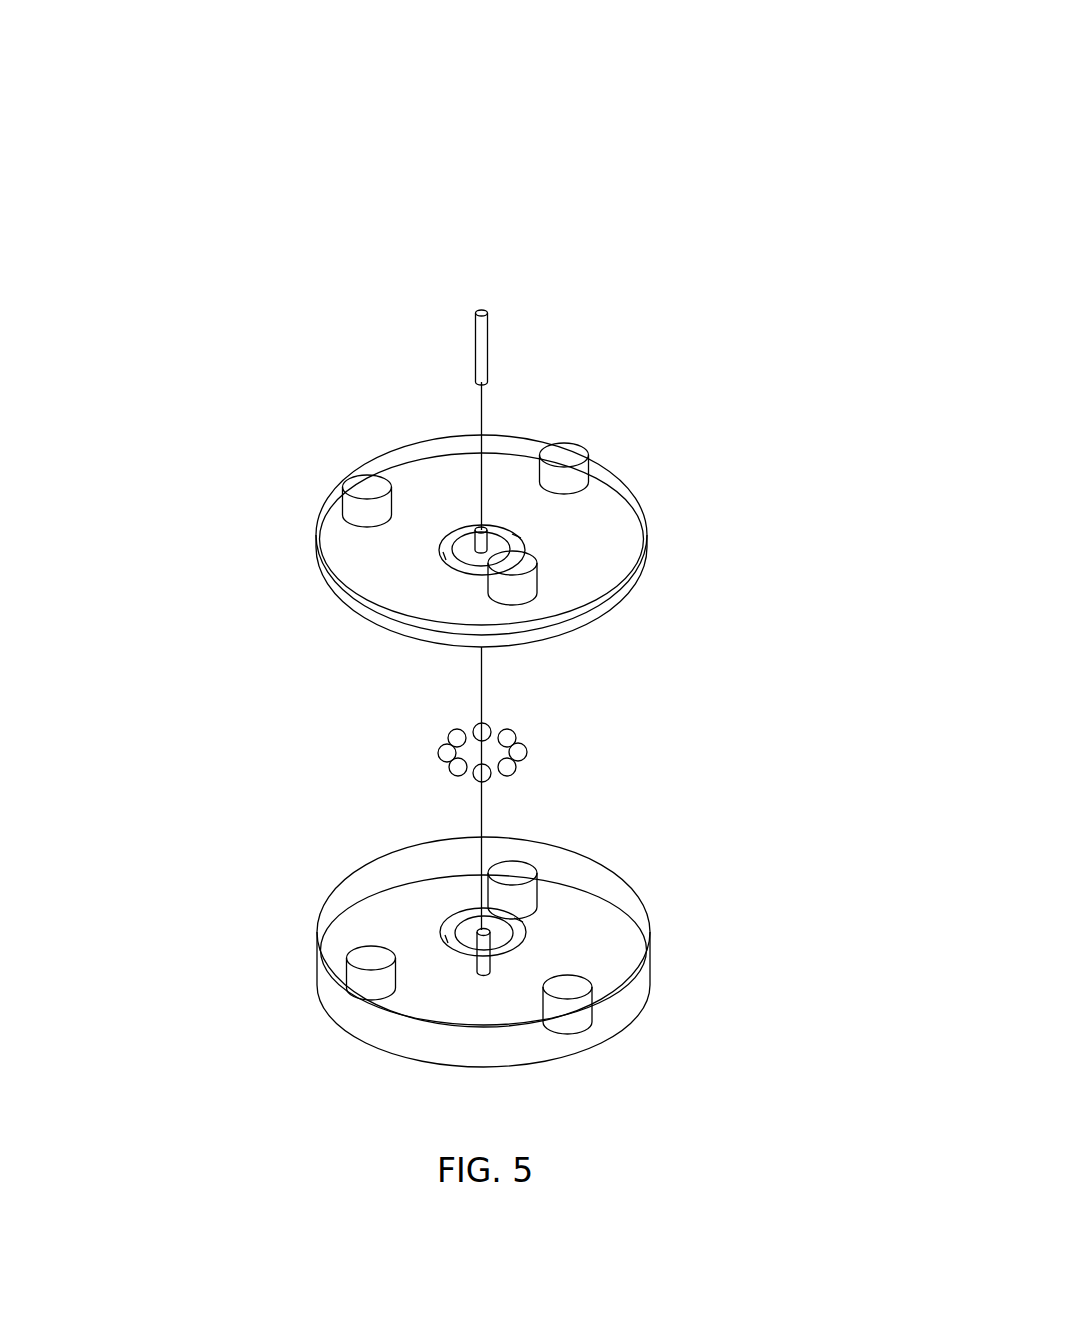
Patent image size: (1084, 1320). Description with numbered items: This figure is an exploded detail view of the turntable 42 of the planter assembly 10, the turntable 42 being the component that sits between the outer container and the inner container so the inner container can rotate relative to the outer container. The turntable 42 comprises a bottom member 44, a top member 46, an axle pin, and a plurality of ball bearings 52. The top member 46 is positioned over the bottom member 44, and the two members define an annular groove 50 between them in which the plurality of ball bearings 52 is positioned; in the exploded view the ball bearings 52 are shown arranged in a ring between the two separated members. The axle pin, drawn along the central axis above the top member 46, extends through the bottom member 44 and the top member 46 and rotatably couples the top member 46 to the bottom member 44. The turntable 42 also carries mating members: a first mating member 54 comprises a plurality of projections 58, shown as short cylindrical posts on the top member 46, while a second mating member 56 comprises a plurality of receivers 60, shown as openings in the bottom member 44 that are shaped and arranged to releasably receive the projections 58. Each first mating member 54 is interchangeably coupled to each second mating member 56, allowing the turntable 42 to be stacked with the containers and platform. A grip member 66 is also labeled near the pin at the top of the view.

The ball bearing assembly 10 is at (624, 203).
The turntable 42 is at (728, 494).
The bottom member 44 is at (633, 937).
The top member 46 is at (610, 542).
The annular groove 50 is at (556, 928).
The ball bearings 52 is at (455, 737).
The first mating members 54 is at (290, 505).
The second mating members 56 is at (343, 1062).
The projections 58 is at (372, 487).
The receivers 60 is at (500, 880).
The grip members 66 is at (482, 350).